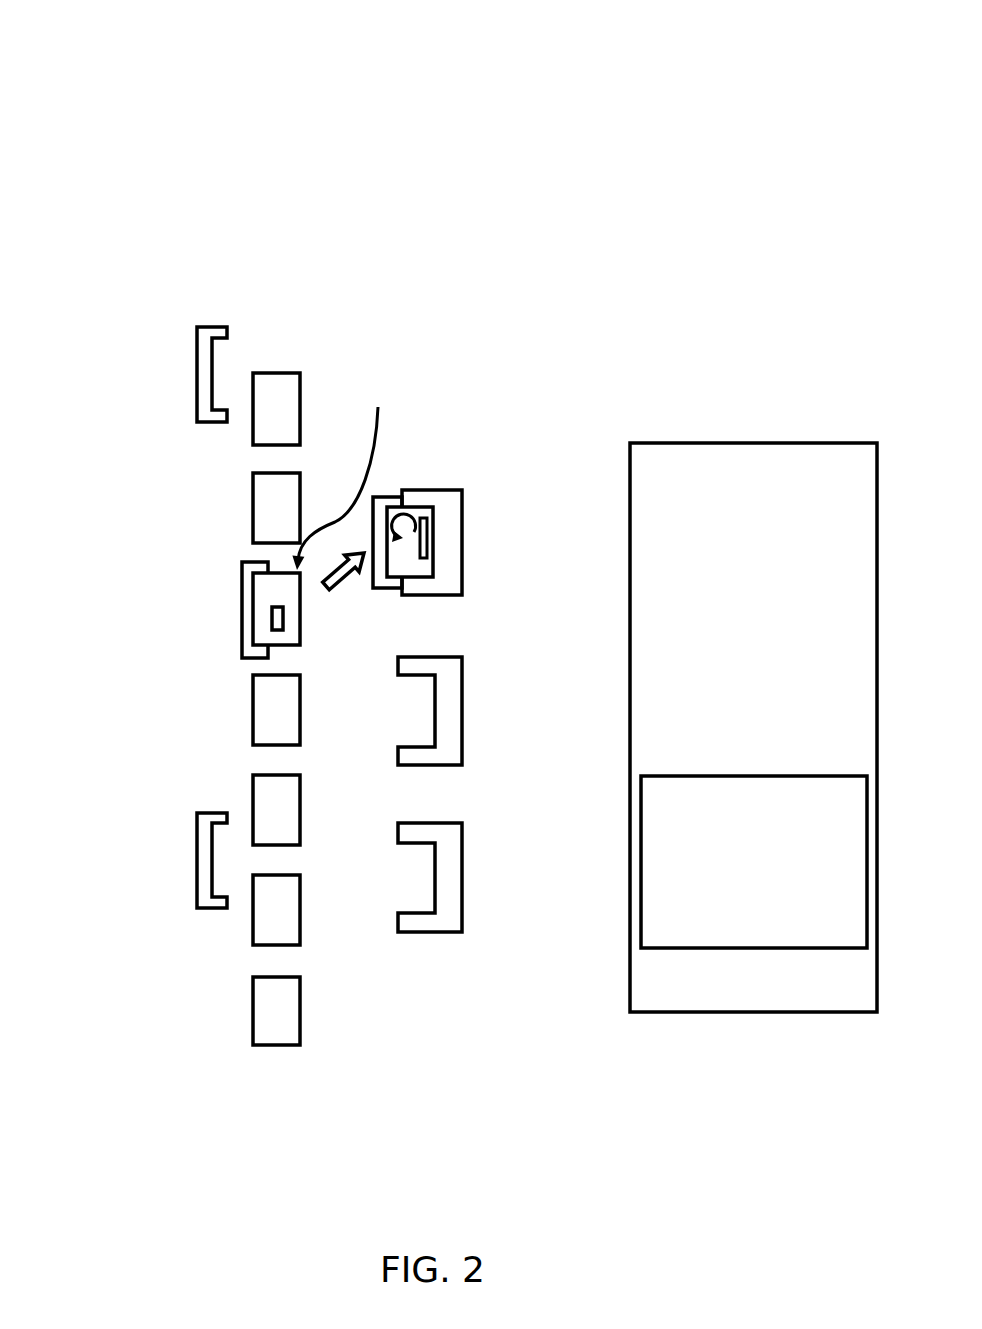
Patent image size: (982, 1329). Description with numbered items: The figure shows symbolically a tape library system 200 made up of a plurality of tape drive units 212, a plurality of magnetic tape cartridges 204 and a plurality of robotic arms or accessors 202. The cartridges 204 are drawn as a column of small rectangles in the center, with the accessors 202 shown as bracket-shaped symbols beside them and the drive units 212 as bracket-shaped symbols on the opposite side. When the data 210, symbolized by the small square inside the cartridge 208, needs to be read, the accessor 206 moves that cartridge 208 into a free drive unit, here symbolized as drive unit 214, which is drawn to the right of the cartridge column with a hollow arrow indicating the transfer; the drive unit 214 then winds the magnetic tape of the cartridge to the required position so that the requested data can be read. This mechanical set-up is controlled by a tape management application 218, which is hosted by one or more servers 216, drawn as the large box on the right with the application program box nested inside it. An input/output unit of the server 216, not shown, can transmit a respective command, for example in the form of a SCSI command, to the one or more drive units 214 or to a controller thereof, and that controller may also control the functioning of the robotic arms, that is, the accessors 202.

The tape library system 200 is at (817, 70).
The robotic arm or accessor 202 is at (195, 365).
The magnetic tape cartridge 204 is at (265, 1078).
The accessor (robotic arm) 206 is at (232, 617).
The cartridge 208 is at (345, 472).
The data 210 is at (283, 617).
The tape drive unit 212 is at (438, 950).
The drive unit 214 is at (463, 543).
The server 216 is at (753, 727).
The tape management application 218 is at (754, 862).